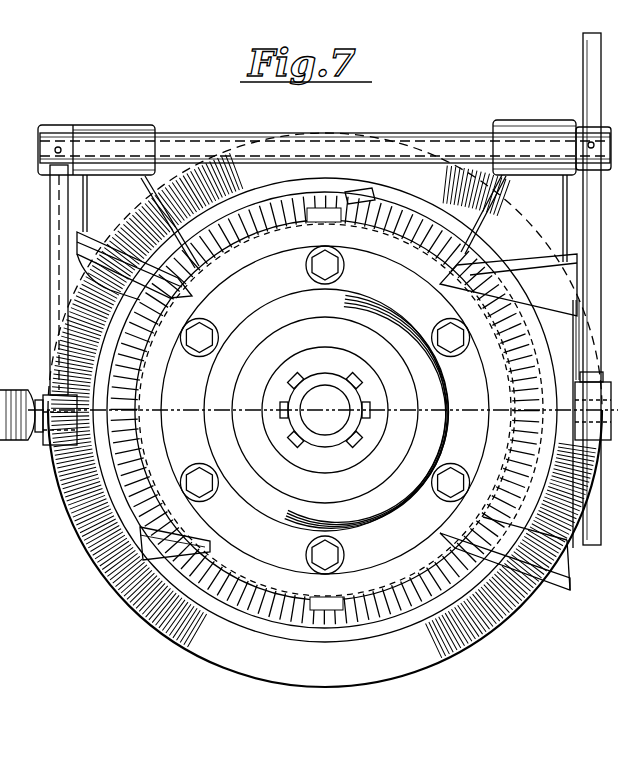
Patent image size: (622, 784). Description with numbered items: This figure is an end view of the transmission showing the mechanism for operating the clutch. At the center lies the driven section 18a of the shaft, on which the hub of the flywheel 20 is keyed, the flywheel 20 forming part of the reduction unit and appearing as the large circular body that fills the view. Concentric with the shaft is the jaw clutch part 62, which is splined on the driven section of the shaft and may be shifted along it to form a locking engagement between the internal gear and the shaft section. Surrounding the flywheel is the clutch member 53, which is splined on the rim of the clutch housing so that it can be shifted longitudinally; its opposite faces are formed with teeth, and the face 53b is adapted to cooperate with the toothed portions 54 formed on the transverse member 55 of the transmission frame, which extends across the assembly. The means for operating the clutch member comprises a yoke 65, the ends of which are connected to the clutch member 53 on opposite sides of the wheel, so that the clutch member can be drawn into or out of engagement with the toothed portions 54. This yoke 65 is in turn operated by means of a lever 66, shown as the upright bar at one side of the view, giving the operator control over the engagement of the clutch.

The flywheel 20 is at (248, 655).
The clutch member 53 is at (414, 207).
The toothed face of clutch member 53b is at (358, 194).
The toothed portions 54 is at (150, 292).
The transverse member 55 is at (538, 505).
The jaw clutch part 62 is at (284, 443).
The driven section of the shaft 18a is at (325, 410).
The yoke 65 is at (97, 475).
The lever 66 is at (583, 60).